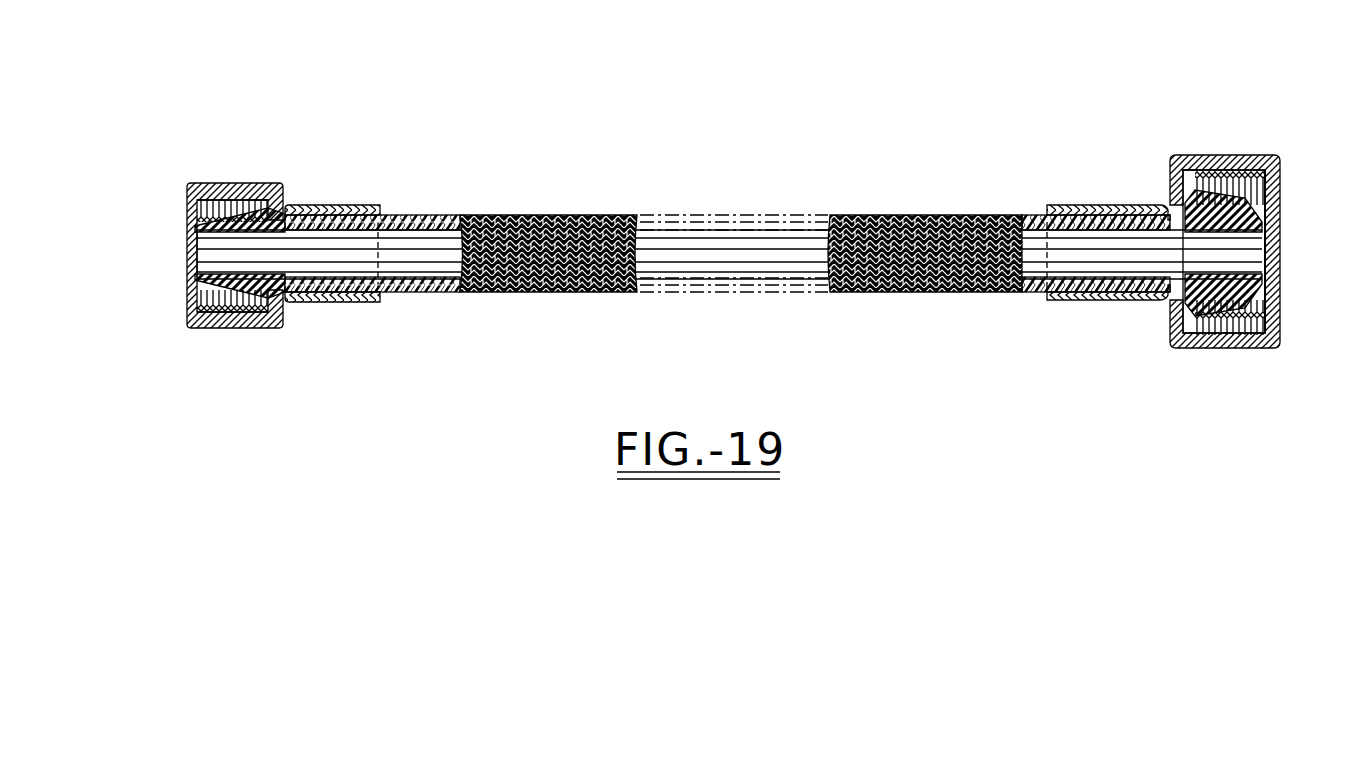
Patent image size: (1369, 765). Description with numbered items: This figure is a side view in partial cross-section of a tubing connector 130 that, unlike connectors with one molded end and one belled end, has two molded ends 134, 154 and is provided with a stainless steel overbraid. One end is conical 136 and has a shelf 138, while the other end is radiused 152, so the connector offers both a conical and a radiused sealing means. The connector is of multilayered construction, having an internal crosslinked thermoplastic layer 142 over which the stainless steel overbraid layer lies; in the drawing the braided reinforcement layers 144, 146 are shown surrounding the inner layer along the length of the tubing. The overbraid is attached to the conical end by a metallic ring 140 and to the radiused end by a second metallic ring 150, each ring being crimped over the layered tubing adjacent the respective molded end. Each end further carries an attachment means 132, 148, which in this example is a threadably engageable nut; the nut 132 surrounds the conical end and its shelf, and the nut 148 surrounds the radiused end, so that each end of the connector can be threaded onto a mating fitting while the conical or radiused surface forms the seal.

The connector 130 is at (366, 156).
The attachment means 132 is at (1203, 157).
The molded end 134 is at (1262, 250).
The conical end 136 is at (1255, 200).
The shelf 138 is at (1213, 347).
The metallic ring 140 is at (1098, 207).
The internal crosslinked thermoplastic layer 142 is at (421, 293).
The reinforcement layer 144 is at (440, 293).
The braid 146 is at (588, 293).
The attachment means 148 is at (220, 182).
The metallic ring 150 is at (343, 302).
The radiused end 152 is at (232, 292).
The molded end 154 is at (198, 265).